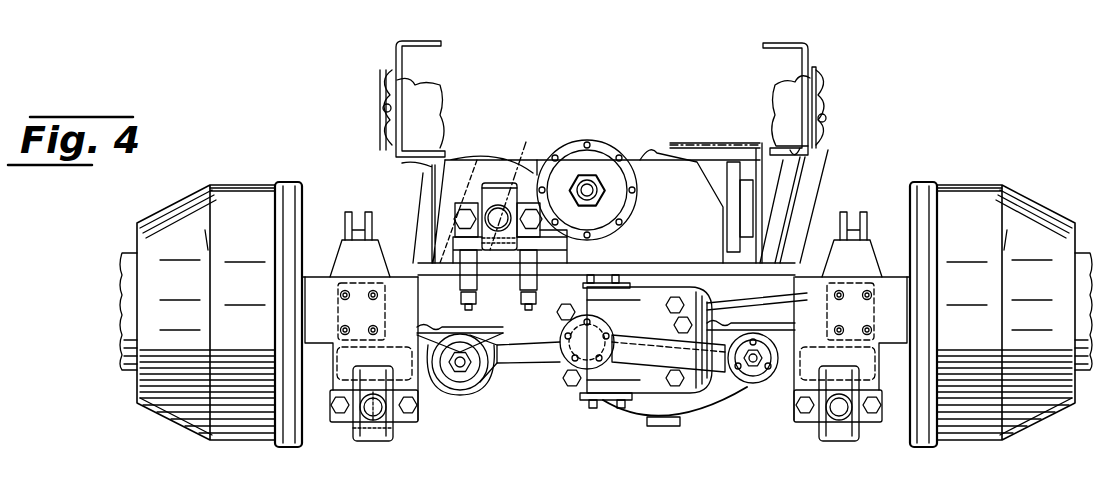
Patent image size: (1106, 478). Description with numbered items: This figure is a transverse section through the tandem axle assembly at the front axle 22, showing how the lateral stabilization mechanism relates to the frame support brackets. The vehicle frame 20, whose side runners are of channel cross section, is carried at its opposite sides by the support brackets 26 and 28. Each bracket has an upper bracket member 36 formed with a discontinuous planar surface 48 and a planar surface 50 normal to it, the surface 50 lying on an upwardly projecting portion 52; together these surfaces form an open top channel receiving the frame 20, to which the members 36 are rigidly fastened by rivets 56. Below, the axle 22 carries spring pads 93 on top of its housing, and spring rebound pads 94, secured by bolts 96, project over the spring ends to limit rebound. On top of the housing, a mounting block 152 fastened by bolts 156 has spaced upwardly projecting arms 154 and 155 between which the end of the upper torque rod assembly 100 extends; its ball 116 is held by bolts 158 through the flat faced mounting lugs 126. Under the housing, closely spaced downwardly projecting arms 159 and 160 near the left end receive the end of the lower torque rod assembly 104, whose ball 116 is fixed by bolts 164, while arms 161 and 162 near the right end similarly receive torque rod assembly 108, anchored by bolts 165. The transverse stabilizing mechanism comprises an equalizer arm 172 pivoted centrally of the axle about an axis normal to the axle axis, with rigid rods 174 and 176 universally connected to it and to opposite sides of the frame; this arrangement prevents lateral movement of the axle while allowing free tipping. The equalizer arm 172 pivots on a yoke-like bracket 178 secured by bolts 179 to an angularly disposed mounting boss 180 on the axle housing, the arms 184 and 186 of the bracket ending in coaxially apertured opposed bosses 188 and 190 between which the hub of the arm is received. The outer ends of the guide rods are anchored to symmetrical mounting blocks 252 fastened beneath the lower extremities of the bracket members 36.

The vehicle frame 20 is at (443, 40).
The front axle 22 is at (722, 412).
The support bracket 26 is at (840, 155).
The support bracket 28 is at (368, 137).
The upper bracket member 36 is at (392, 158).
The discontinuous planar surface 48 is at (790, 145).
The discontinuous planar surface 50 is at (392, 108).
The upwardly projecting portion 52 is at (388, 114).
The rivets 56 is at (418, 92).
The spring pads 93 is at (356, 270).
The spring rebound pads 94 is at (349, 212).
The bolts 96 is at (338, 310).
The torque rod assembly 100 is at (495, 174).
The torque rod assembly 104 is at (392, 448).
The torque rod assembly 108 is at (838, 449).
The ball 116 is at (522, 142).
The mounting lugs 126 is at (425, 200).
The mounting block 152 is at (512, 256).
The upwardly projecting arm 154 is at (525, 238).
The upwardly projecting arm 155 is at (460, 232).
The bolts 156 is at (518, 300).
The bolts 158 is at (456, 221).
The downwardly projecting arm 159 is at (343, 420).
The downwardly projecting arm 160 is at (428, 411).
The downwardly extending arm 161 is at (800, 380).
The downwardly extending arm 162 is at (890, 380).
The bolts 164 is at (333, 401).
The bolts 165 is at (810, 420).
The equalizer arm 172 is at (586, 383).
The rigid rod 174 is at (637, 349).
The rigid rod 176 is at (526, 374).
The yoke-like bracket 178 is at (722, 312).
The bolts 179 is at (553, 371).
The mounting boss 180 is at (712, 310).
The arm 184 is at (688, 288).
The arm 186 is at (648, 418).
The boss 188 is at (620, 290).
The boss 190 is at (616, 400).
The mounting block 252 is at (622, 346).